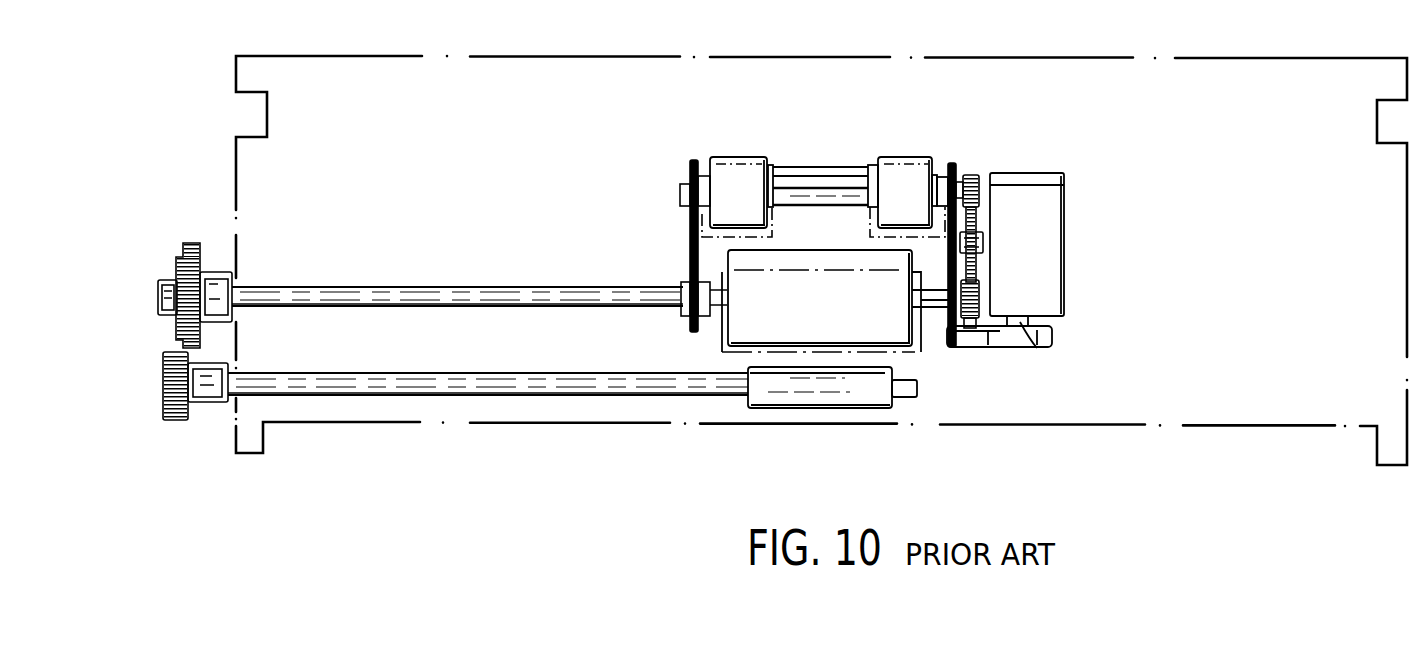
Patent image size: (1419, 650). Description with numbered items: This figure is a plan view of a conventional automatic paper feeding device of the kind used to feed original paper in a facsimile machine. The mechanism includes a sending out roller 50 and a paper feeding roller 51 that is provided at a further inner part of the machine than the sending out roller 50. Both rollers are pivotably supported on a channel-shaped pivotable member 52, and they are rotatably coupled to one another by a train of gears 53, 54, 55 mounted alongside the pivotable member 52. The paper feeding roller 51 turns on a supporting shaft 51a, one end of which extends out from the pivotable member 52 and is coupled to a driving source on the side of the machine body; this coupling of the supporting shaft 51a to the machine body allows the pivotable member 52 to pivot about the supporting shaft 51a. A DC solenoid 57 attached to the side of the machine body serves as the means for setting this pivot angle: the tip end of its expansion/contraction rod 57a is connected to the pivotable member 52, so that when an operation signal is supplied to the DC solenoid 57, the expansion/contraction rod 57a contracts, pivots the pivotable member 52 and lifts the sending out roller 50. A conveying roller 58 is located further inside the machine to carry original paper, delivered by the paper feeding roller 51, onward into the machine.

The sending out roller 50 is at (903, 157).
The paper feeding roller 51 is at (888, 325).
The supporting shaft 51a is at (495, 308).
The pivotable member 52 is at (690, 261).
The gear 53 is at (973, 325).
The gear 54 is at (982, 227).
The gear 55 is at (973, 177).
The DC solenoid 57 is at (1053, 283).
The expansion/contraction rod 57a is at (1037, 348).
The conveying roller 58 is at (827, 396).